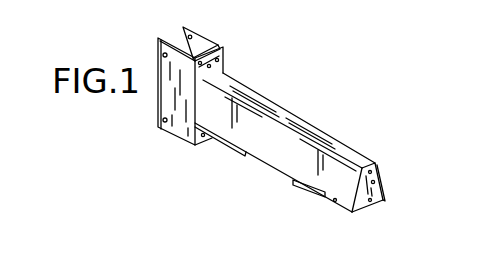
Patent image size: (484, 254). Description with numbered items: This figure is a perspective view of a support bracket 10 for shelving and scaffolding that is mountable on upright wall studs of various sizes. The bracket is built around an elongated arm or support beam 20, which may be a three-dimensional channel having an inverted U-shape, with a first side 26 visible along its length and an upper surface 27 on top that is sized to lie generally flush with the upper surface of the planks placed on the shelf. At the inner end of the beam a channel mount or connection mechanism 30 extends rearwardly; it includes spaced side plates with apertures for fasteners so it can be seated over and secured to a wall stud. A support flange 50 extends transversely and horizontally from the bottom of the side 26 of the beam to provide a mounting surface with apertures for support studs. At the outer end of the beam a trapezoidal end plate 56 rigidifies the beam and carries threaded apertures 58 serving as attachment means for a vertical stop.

The support bracket 10 is at (362, 58).
The elongated arm or support beam 20 is at (279, 112).
The first side of the elongated arm 26 is at (262, 149).
The upper surface of the elongated arm 27 is at (355, 158).
The channel mount or connection mechanism 30 is at (197, 43).
The support flange 50 is at (283, 173).
The end plate 56 is at (378, 183).
The threaded apertures 58 is at (366, 207).